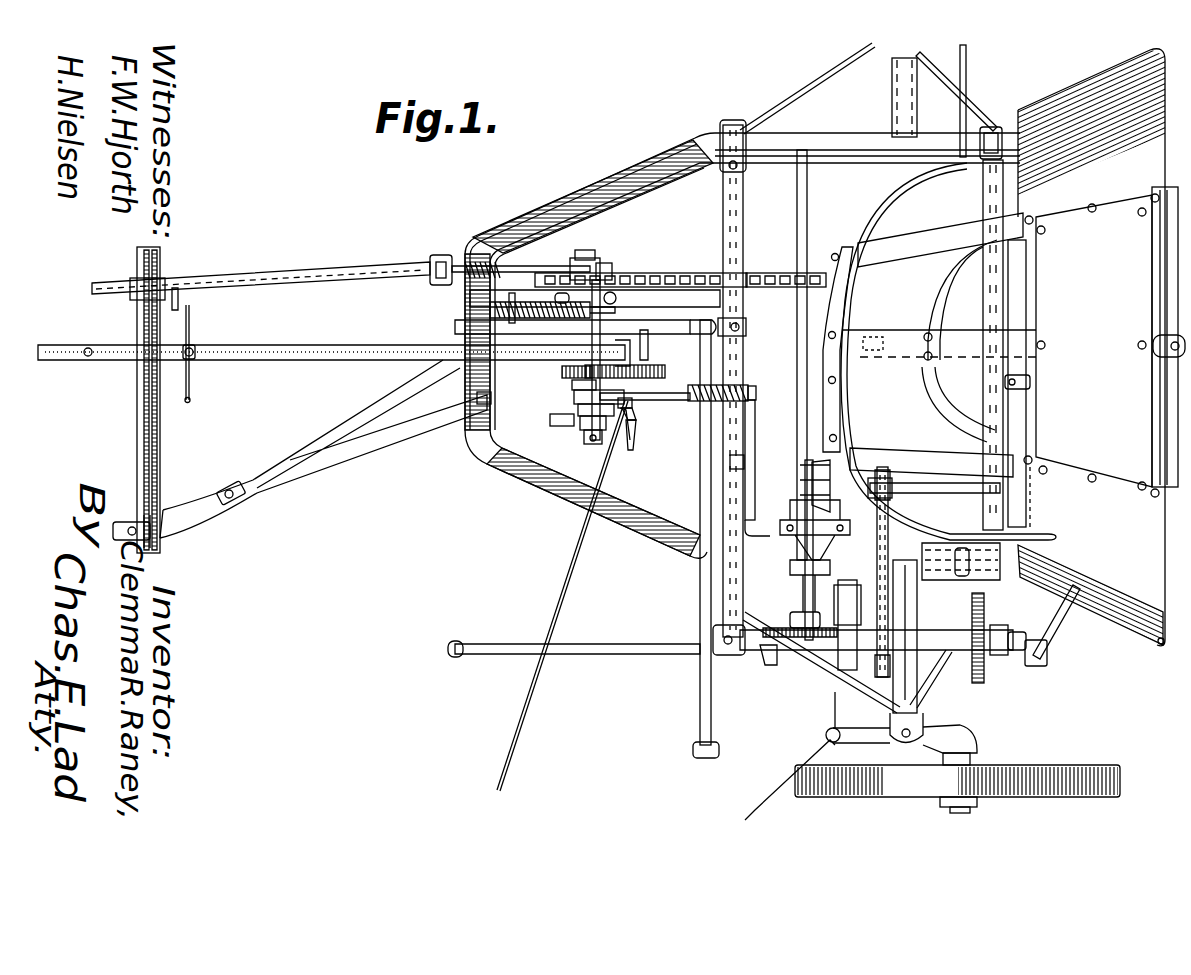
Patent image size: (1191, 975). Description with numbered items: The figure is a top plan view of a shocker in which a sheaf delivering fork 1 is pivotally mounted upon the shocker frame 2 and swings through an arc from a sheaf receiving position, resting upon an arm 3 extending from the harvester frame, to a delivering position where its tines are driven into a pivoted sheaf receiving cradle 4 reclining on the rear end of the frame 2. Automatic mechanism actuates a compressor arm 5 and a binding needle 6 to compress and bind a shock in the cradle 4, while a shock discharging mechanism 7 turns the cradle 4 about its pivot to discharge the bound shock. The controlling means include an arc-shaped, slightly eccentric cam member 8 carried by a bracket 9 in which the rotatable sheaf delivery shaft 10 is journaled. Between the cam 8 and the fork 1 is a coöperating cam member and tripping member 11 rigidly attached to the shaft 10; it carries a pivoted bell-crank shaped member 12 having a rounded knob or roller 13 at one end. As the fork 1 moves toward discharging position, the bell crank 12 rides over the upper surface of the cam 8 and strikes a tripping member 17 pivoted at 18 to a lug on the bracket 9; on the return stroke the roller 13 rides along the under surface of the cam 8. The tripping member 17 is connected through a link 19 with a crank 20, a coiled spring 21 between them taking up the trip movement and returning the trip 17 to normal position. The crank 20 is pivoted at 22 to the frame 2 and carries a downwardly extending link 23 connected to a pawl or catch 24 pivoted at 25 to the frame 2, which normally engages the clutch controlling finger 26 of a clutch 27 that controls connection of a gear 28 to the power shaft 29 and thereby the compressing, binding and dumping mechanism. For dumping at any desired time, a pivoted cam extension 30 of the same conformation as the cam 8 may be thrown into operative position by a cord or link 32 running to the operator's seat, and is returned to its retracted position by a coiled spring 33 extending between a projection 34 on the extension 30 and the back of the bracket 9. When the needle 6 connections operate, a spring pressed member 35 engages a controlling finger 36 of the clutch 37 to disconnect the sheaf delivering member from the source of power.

The sheaf delivering fork 1 is at (320, 345).
The shocker frame 2 is at (640, 166).
The arm 3 is at (160, 470).
The sheaf receiving cradle 4 is at (955, 235).
The compressor arm 5 is at (915, 545).
The binding needle 6 is at (965, 75).
The shock discharging mechanism 7 is at (1005, 386).
The cam member 8 is at (575, 398).
The bracket 9 is at (582, 410).
The sheaf delivery shaft 10 is at (578, 426).
The coöperating cam member and tripping member 11 is at (612, 366).
The bell-crank shaped member 12 is at (565, 382).
The rounded knob or roller 13 is at (565, 392).
The tripping member 17 is at (628, 440).
The pivot 18 is at (645, 366).
The link 19 is at (670, 401).
The crank 20 is at (756, 440).
The coiled spring 21 is at (700, 406).
The pivot 22 is at (758, 404).
The link 23 is at (862, 452).
The pawl or catch 24 is at (792, 500).
The pivot 25 is at (895, 486).
The clutch controlling finger 26 is at (790, 560).
The clutch 27 is at (780, 535).
The gear 28 is at (826, 466).
The power shaft 29 is at (800, 348).
The cam extension 30 is at (628, 408).
The cord or link 32 is at (562, 571).
The coiled spring 33 is at (634, 420).
The projection 34 is at (634, 430).
The spring pressed member 35 is at (668, 274).
The controlling finger 36 is at (602, 262).
The clutch 37 is at (560, 268).